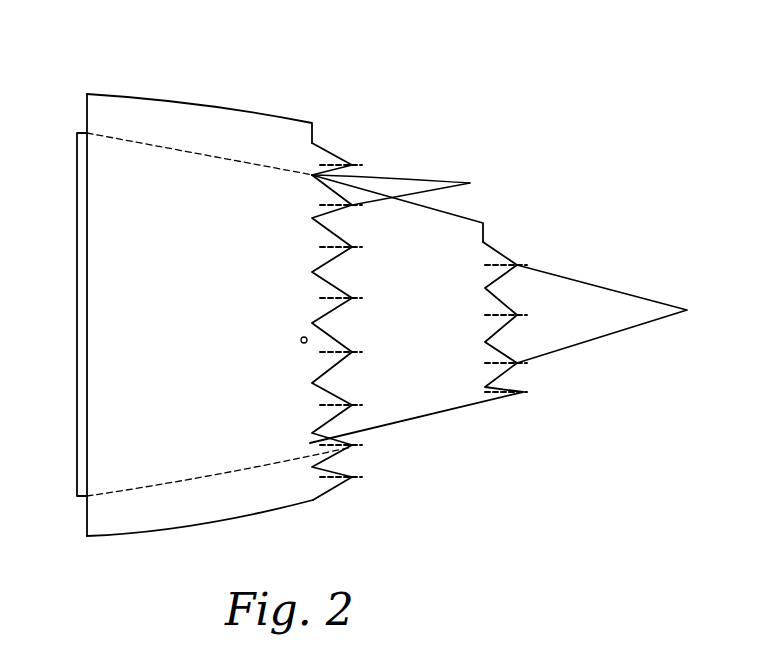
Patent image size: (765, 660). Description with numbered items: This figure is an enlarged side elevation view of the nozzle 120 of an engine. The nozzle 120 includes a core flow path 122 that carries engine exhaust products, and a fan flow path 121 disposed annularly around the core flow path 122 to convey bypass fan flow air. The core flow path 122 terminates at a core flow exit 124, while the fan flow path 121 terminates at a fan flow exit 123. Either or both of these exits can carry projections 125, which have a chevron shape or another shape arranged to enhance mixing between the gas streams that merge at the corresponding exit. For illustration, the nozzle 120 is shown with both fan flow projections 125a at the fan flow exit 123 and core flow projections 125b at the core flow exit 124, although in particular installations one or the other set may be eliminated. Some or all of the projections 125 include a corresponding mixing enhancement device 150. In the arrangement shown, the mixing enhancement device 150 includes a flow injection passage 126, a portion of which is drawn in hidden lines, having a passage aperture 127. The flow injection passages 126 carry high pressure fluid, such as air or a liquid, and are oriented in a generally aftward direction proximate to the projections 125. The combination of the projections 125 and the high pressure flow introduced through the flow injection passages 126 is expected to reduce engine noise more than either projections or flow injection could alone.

The nozzle 120 is at (431, 147).
The fan flow path 121 is at (222, 138).
The core flow path 122 is at (445, 367).
The fan flow exit 123 is at (312, 502).
The core flow exit 124 is at (485, 231).
The projections 125 is at (522, 412).
The fan flow projections 125a is at (470, 183).
The core flow projections 125b is at (487, 290).
The flow injection passage 126 is at (352, 168).
The passage aperture 127 is at (365, 168).
The mixing enhancement device 150 is at (428, 168).